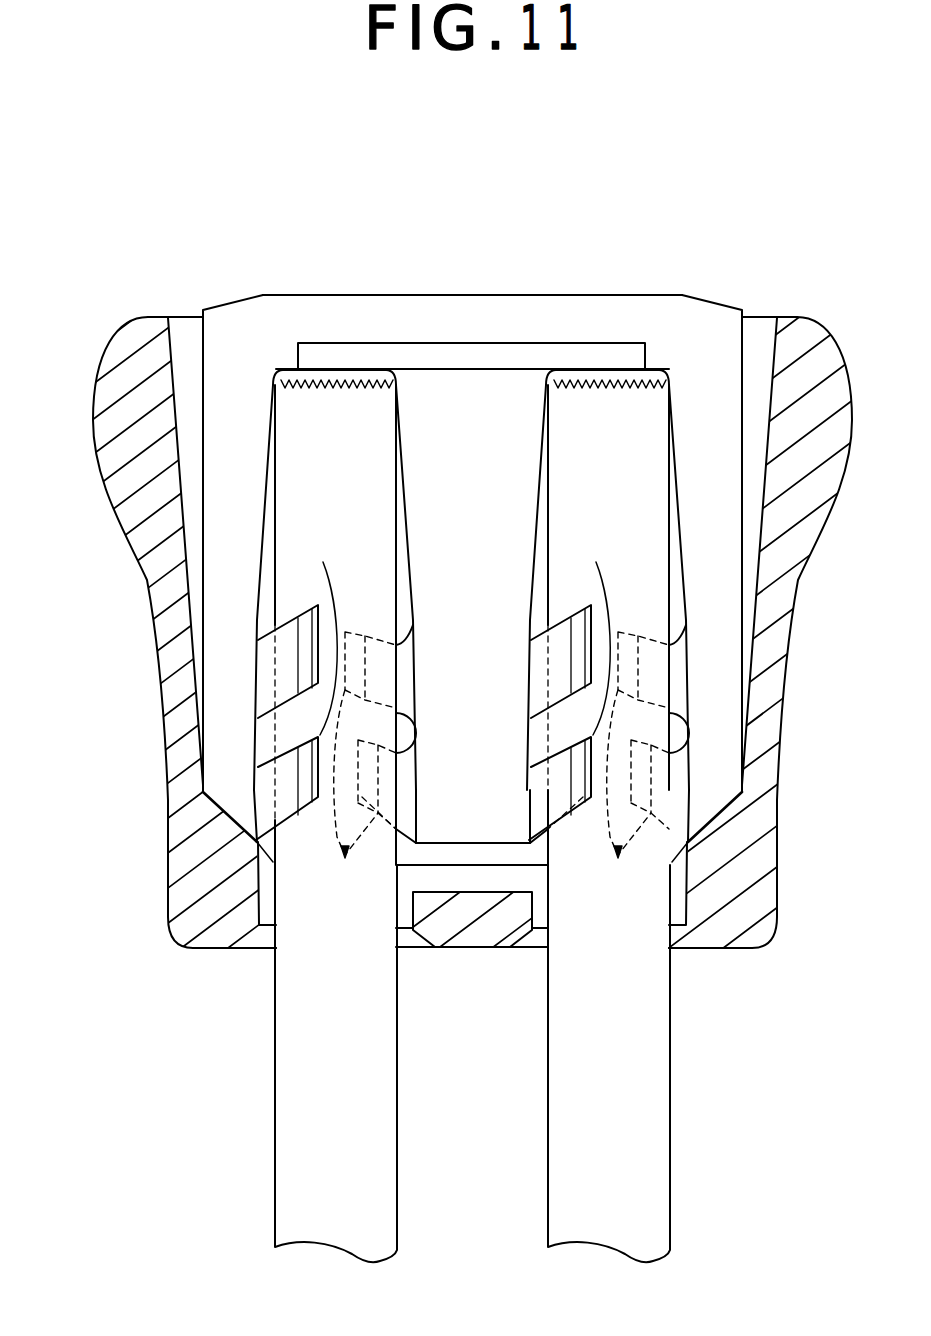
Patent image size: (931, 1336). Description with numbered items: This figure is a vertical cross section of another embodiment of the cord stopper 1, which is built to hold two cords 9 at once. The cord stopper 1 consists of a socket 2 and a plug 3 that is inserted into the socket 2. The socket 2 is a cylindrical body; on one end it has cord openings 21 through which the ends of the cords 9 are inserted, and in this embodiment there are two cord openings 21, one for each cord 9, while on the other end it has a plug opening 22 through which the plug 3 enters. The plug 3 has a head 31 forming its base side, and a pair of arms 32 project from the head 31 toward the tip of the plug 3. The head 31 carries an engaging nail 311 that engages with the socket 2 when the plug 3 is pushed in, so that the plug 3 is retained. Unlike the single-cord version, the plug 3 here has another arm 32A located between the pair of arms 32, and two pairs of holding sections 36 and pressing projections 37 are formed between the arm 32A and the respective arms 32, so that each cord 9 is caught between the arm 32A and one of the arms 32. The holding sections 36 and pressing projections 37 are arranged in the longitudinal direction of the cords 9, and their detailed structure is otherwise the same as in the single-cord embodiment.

The cord stopper 1 is at (703, 232).
The socket 2 is at (107, 418).
The plug 3 is at (273, 320).
The cord 9 is at (297, 1158).
The cord opening 21 is at (263, 938).
The plug opening 22 is at (187, 330).
The head 31 is at (520, 315).
The arm 32 is at (220, 777).
The arm 32A is at (477, 797).
The holding section 36 is at (300, 612).
The pressing projection 37 is at (508, 764).
The engaging nail 311 is at (440, 353).